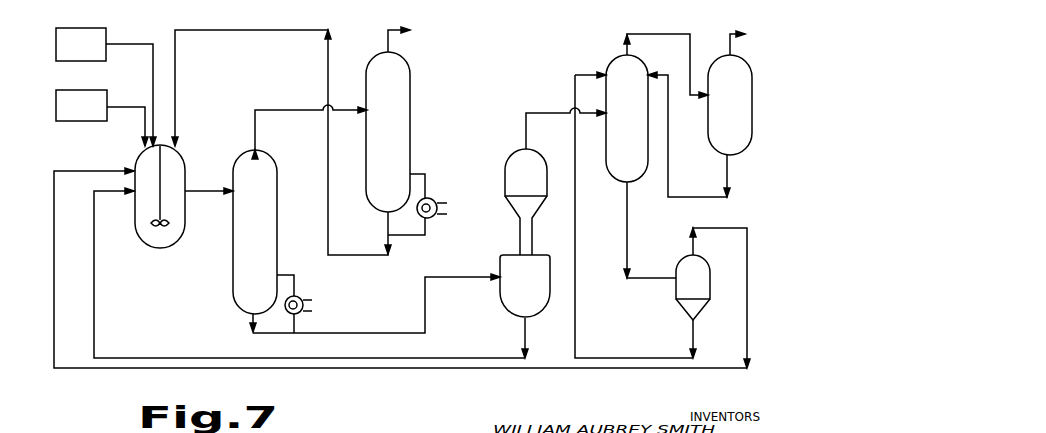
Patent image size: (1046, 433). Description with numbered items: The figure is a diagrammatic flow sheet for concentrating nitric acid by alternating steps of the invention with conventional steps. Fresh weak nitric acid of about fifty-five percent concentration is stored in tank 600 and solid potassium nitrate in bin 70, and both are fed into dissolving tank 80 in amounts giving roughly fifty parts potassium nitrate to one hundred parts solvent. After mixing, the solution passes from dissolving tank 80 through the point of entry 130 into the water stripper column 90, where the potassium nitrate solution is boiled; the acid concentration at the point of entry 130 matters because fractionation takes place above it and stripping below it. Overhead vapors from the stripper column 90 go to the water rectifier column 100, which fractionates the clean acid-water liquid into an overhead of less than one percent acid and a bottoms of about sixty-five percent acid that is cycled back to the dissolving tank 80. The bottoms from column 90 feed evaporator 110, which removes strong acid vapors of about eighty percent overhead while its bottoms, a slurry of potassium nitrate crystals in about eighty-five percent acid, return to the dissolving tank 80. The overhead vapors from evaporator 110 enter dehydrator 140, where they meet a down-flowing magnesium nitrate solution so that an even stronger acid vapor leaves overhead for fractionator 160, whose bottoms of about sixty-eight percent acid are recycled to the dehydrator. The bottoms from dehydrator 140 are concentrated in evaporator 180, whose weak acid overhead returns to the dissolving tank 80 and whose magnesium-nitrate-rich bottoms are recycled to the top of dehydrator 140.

The tank 600 is at (104, 19).
The bin 70 is at (112, 80).
The dissolving tank 80 is at (178, 161).
The point of entry 130 is at (230, 189).
The water stripper column 90 is at (265, 210).
The water rectifier column 100 is at (400, 111).
The evaporator 110 is at (535, 280).
The dehydrator 140 is at (640, 118).
The fractionator 160 is at (742, 103).
The evaporator 180 is at (696, 268).